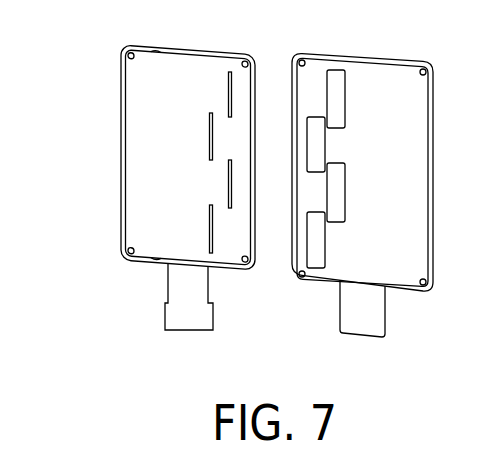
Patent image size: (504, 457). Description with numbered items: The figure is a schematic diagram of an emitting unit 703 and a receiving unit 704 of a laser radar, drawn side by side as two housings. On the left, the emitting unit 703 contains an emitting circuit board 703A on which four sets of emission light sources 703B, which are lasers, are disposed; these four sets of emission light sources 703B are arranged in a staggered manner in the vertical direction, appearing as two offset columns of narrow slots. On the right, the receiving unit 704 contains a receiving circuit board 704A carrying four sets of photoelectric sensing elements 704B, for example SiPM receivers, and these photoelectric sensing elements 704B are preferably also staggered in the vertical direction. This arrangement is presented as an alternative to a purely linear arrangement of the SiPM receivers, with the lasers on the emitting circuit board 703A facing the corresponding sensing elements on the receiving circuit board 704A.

The first connector housing 703 is at (188, 171).
The emitting circuit board 703A is at (142, 112).
The emission light sources 703B is at (210, 236).
The second connector housing 704 is at (362, 178).
The receiving circuit board 704A is at (383, 155).
The photoelectric sensing elements 704B is at (340, 88).